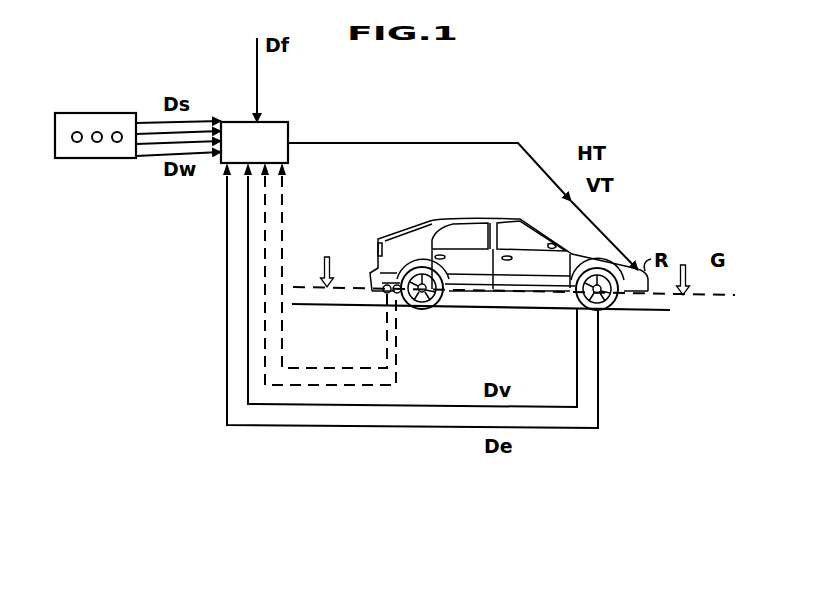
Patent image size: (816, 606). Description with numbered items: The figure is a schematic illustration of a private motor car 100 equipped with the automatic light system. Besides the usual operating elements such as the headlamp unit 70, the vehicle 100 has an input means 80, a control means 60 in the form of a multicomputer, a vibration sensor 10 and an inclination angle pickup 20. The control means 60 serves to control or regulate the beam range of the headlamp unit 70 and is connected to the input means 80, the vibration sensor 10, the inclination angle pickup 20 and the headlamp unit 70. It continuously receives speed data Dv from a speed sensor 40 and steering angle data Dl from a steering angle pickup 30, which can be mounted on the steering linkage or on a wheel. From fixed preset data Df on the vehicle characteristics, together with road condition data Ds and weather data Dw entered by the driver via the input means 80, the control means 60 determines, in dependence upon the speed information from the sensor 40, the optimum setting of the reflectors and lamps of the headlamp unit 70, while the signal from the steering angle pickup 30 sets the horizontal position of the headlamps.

The vibration sensor 10 is at (334, 265).
The inclination angle pickup 20 is at (347, 274).
The steering angle pickup 30 is at (426, 295).
The speed sensor 40 is at (410, 285).
The control means 60 is at (254, 142).
The headlamp unit 70 is at (471, 206).
The input means 80 is at (108, 158).
The motor car 100 is at (509, 248).